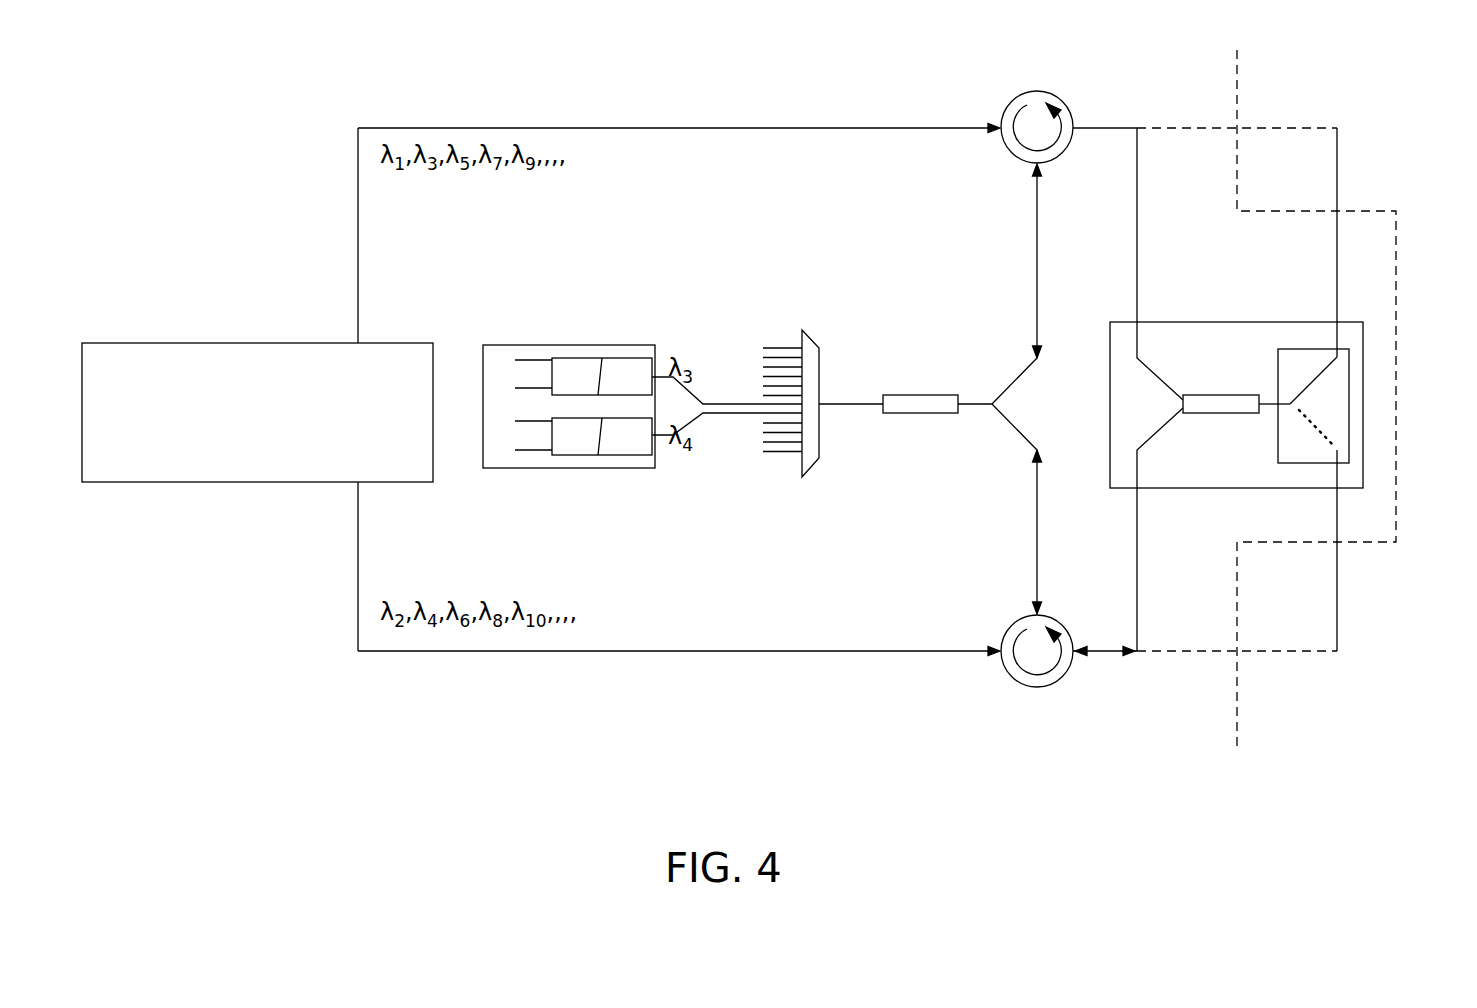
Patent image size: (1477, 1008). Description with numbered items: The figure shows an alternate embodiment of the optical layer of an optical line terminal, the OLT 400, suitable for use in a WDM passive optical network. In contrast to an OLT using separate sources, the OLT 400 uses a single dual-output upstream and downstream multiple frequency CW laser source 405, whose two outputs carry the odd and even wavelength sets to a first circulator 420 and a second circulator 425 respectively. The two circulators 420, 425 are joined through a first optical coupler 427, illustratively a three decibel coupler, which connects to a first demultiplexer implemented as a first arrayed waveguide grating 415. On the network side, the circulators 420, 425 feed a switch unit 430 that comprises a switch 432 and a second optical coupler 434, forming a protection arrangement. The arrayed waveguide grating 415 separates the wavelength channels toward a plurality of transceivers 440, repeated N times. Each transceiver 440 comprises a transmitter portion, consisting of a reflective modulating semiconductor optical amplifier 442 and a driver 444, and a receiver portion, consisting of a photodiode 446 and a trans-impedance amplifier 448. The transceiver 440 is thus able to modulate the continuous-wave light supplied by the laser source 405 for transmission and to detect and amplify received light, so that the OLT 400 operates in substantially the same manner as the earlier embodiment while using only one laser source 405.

The OLT 400 is at (1030, 833).
The dual-output upstream and downstream multiple frequency CW laser source 405 is at (175, 483).
The first arrayed waveguide grating 415 is at (812, 336).
The first circulator 420 is at (1012, 108).
The second circulator 425 is at (1002, 670).
The first optical coupler 427 is at (897, 413).
The switch unit 430 is at (1261, 389).
The switch 432 is at (1345, 348).
The second optical coupler 434 is at (1206, 395).
The transceiver 440 is at (571, 409).
The reflective modulating semiconductor optical amplifier 442 is at (583, 356).
The driver 444 is at (641, 356).
The photodiode 446 is at (574, 456).
The trans-impedance amplifier 448 is at (633, 456).